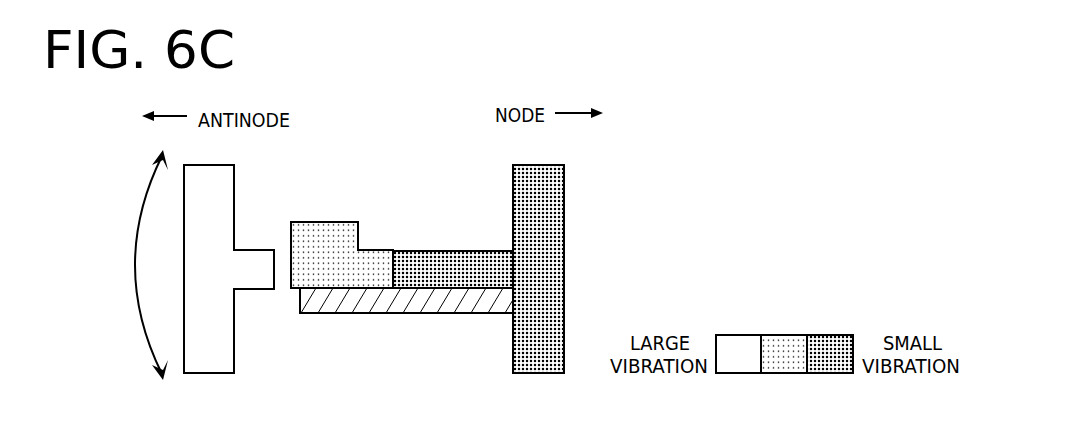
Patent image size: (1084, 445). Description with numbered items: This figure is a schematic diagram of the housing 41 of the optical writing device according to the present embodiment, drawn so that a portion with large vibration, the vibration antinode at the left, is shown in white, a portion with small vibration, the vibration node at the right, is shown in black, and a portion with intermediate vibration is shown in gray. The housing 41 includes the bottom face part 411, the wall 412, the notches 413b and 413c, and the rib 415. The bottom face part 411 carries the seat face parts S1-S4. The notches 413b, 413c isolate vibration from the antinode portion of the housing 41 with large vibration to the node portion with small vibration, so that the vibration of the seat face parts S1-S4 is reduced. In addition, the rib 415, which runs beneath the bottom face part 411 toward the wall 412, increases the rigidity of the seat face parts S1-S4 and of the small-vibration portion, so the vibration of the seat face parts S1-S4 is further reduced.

The housing 41 is at (458, 99).
The bottom face part 411 is at (432, 251).
The wall 412 is at (557, 213).
The notch 413b is at (269, 295).
The notch 413c is at (282, 283).
The rib 415 is at (378, 313).
The seat face parts S1-S4 is at (317, 222).